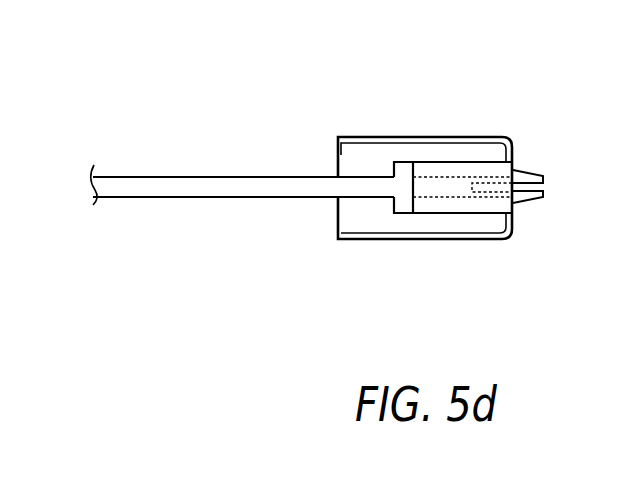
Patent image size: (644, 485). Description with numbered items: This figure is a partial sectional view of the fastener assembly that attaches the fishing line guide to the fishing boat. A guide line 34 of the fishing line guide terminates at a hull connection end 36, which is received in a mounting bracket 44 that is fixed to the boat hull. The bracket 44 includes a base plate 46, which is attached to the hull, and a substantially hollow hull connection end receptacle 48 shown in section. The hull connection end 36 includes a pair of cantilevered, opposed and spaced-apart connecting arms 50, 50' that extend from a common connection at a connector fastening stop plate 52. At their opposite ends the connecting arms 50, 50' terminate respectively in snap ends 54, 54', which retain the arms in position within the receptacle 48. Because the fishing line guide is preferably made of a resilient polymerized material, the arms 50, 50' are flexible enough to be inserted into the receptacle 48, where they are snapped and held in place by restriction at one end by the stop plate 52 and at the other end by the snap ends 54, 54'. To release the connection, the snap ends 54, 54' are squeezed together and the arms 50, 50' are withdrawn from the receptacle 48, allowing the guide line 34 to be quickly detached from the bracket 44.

The guide line 34 is at (169, 177).
The hull connection end 36 is at (270, 177).
The mounting bracket 44 is at (417, 240).
The base plate 46 is at (339, 136).
The hull connection end receptacle 48 is at (437, 162).
The connecting arm 50 is at (459, 177).
The connecting arm 50' is at (465, 242).
The connector fastening stop plate 52 is at (392, 206).
The snap end 54 is at (555, 143).
The snap end 54' is at (559, 232).